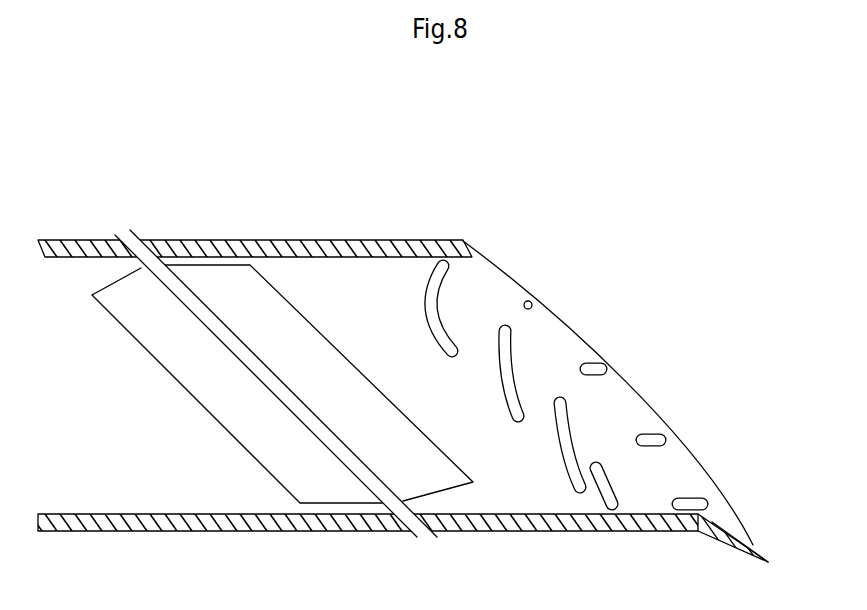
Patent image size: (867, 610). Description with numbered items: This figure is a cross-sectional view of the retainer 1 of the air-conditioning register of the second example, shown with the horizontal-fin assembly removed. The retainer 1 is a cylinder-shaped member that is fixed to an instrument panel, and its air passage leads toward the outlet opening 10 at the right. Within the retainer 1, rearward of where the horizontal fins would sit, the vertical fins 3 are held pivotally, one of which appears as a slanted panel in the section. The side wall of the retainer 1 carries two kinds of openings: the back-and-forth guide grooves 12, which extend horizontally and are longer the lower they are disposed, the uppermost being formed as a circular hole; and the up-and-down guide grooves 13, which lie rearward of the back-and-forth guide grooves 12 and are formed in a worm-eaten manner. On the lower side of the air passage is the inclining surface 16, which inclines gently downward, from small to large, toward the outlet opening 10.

The retainer 1 is at (307, 240).
The vertical fins 3 is at (200, 375).
The outlet opening 10 is at (565, 337).
The back-and-forth guide grooves 12 is at (697, 500).
The up-and-down guide grooves 13 is at (565, 447).
The inclining surface 16 is at (733, 532).